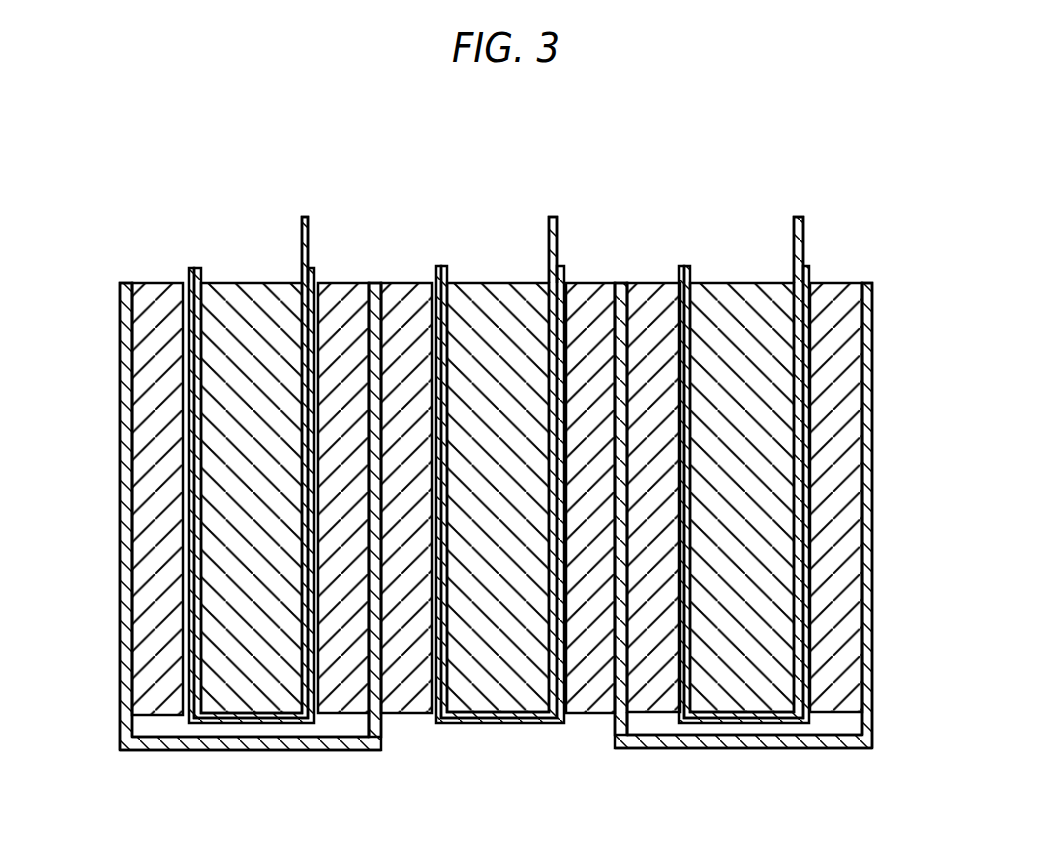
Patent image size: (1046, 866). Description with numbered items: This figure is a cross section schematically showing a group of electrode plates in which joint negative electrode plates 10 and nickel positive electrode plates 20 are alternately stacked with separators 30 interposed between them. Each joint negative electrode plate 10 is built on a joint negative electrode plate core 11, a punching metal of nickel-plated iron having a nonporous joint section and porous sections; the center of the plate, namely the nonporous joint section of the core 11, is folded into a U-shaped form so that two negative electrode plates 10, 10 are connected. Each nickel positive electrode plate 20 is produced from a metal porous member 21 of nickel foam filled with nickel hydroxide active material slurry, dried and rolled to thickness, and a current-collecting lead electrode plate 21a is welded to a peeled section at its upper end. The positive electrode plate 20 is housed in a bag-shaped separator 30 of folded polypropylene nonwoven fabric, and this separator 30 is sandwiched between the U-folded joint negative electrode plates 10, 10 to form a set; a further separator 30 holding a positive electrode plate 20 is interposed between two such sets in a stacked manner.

The joint negative electrode plate 10 is at (158, 256).
The joint negative electrode plate core 11 is at (377, 288).
The nickel positive electrode plate 20 is at (254, 256).
The metal porous member 21 is at (290, 710).
The current-collecting lead electrode plate 21a is at (305, 218).
The bag-shaped separator 30 is at (207, 721).